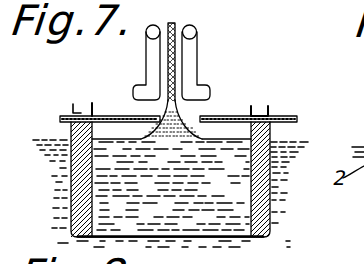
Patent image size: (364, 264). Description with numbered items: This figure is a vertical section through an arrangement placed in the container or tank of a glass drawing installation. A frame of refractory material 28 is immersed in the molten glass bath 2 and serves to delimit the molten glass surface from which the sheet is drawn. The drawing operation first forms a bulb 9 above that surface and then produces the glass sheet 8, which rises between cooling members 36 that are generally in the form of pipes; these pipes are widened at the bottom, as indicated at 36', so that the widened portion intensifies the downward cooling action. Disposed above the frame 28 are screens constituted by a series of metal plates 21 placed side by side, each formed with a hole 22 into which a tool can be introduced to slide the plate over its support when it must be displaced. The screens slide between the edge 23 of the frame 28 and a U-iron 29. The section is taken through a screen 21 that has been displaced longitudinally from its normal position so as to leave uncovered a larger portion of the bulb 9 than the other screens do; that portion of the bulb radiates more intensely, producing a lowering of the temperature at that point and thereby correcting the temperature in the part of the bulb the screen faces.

The molten glass bath 2 is at (158, 193).
The glass sheet 8 is at (195, 68).
The bulb 9 is at (189, 109).
The metal plate 21 is at (262, 90).
The hole 22 is at (261, 100).
The edge of the frame 23 is at (207, 169).
The frame of refractory material 28 is at (182, 191).
The U-iron 29 is at (57, 95).
The cooling member 36 is at (118, 62).
The widened portion of cooling member 36' is at (223, 62).